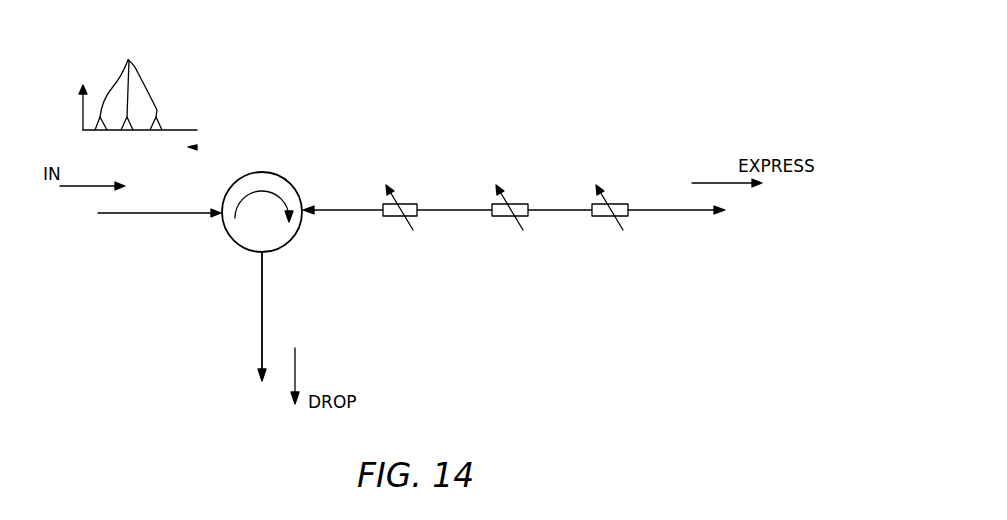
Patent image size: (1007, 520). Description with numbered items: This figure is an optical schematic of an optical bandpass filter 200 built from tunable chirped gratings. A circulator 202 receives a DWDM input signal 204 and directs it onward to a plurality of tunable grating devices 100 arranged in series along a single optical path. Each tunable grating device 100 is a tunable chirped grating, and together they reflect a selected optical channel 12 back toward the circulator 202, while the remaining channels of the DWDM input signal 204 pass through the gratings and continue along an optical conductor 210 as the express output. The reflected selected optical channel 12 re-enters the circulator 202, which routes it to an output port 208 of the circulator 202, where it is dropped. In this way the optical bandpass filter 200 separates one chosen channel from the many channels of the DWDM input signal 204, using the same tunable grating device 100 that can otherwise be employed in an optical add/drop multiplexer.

The selected optical channel 12 is at (138, 96).
The tunable grating device 100 is at (407, 204).
The optical bandpass filter 200 is at (479, 153).
The circulator 202 is at (263, 172).
The DWDM input signal 204 is at (68, 187).
The output port 208 is at (262, 302).
The optical conductor 210 is at (675, 210).